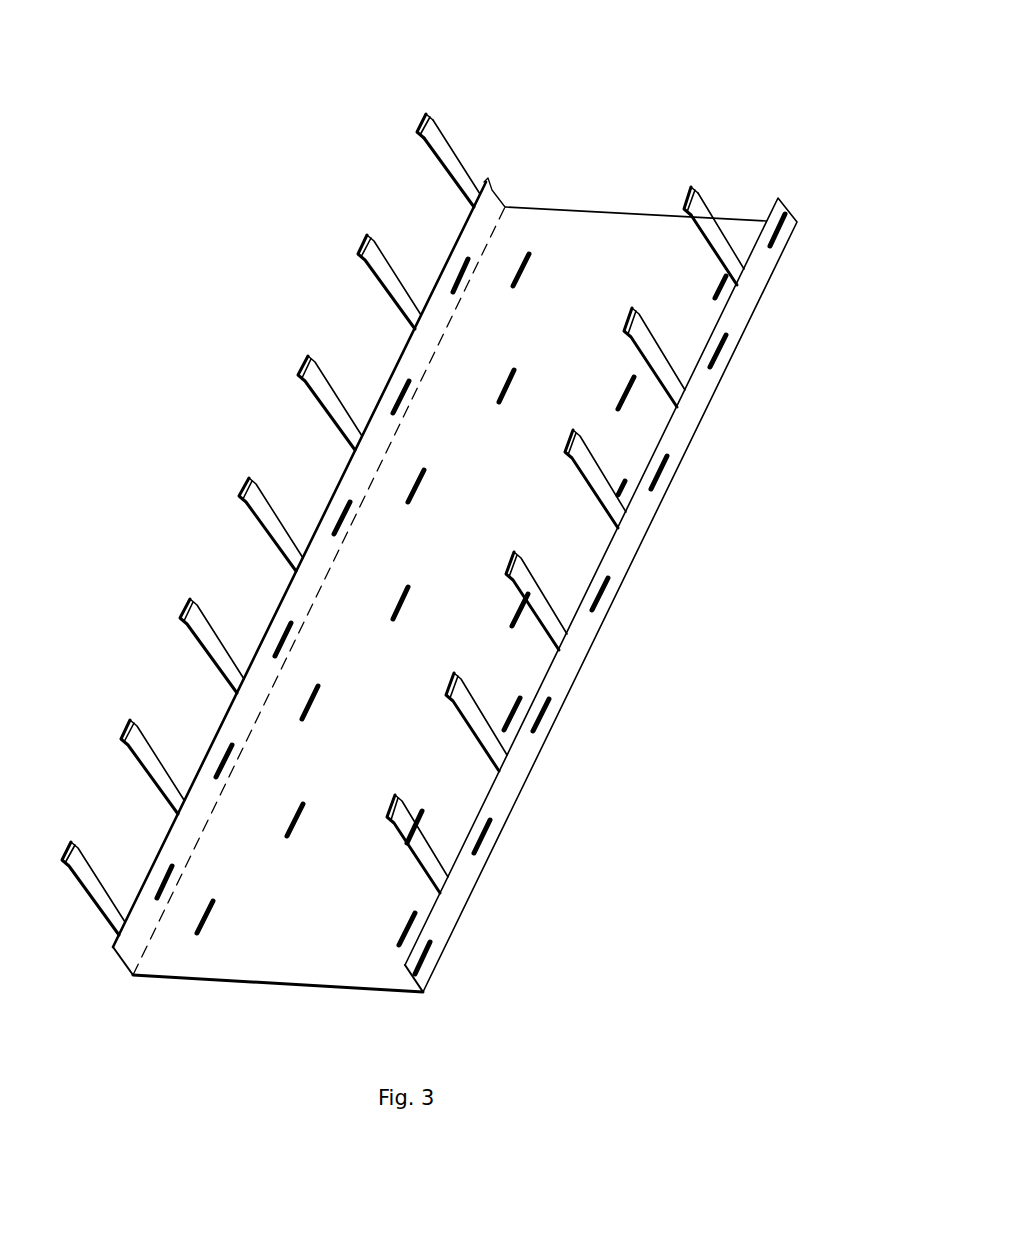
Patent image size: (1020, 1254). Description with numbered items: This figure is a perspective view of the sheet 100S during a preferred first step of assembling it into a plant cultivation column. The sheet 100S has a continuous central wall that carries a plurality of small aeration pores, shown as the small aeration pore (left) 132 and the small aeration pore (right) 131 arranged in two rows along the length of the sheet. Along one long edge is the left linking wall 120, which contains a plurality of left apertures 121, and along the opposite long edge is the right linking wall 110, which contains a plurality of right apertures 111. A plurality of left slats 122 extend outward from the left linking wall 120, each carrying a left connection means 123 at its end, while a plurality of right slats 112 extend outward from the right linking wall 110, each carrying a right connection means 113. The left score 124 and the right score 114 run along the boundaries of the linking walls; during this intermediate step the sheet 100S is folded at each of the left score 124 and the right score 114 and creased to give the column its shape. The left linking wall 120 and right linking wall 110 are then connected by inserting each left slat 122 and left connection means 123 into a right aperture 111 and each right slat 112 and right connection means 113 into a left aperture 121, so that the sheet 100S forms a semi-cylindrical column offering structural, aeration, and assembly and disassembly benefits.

The sheet 100S is at (677, 142).
The right linking wall 110 is at (767, 258).
The right aperture 111 is at (781, 217).
The right slat 112 is at (712, 221).
The right connection means 113 is at (698, 195).
The right score 114 is at (423, 993).
The left linking wall 120 is at (497, 200).
The left aperture 121 is at (458, 272).
The left slat 122 is at (455, 173).
The left connection means 123 is at (435, 114).
The left score 124 is at (133, 977).
The small aeration pore (right) 131 is at (625, 405).
The small aeration pore (left) 132 is at (415, 481).